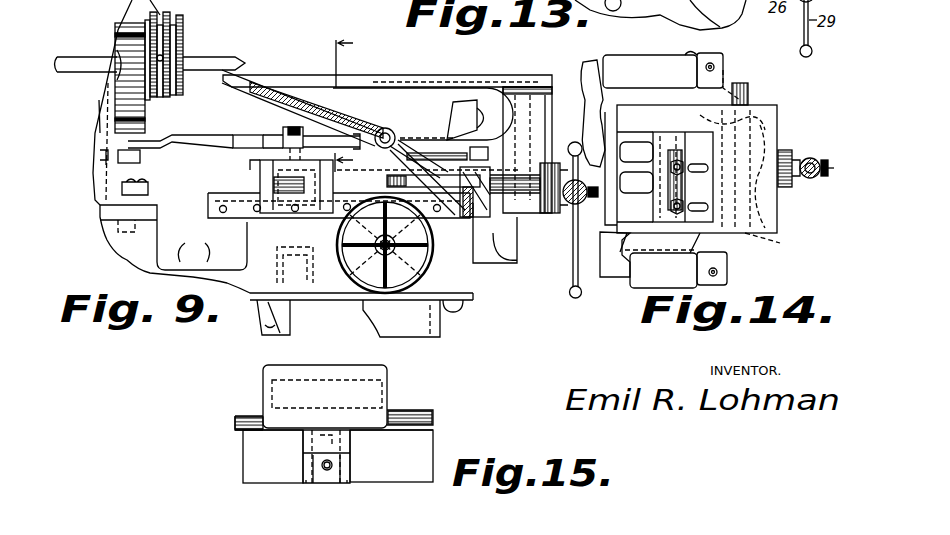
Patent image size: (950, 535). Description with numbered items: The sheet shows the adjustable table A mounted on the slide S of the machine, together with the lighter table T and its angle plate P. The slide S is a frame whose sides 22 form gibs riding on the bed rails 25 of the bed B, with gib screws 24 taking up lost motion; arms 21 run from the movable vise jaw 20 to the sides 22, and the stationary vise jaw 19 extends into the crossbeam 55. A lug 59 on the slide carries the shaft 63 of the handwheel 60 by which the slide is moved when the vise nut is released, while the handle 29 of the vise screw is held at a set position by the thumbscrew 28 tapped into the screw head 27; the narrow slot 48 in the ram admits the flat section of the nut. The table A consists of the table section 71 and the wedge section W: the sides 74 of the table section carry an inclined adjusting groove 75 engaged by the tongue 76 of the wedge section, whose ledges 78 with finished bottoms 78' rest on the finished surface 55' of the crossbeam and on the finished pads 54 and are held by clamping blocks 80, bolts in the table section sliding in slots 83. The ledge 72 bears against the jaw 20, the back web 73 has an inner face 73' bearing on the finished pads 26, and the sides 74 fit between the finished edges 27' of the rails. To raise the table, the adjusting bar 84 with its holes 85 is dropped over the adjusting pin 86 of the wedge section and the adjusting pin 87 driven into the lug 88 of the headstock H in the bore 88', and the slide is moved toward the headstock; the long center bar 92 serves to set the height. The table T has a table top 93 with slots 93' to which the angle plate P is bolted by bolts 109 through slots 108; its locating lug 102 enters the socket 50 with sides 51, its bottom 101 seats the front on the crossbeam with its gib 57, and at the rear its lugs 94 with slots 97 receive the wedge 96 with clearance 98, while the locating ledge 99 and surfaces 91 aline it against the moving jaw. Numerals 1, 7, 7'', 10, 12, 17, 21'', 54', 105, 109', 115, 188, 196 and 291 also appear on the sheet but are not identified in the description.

In FIG. 9, the base 1 is at (420, 327).
In FIG. 9, the foot 7 is at (285, 317).
In FIG. 9, the foot 7'' is at (255, 350).
In FIG. 9, the spindle axis 10 is at (203, 38).
In FIG. 9, the dimension line 12 is at (427, 104).
In FIG. 9, the recess 17 is at (193, 254).
In FIG. 9, the stationary vise jaw 19 is at (458, 125).
In FIG. 9, the movable vise jaw 20 is at (475, 122).
In FIG. 9, the arms 21 is at (515, 166).
In FIG. 9, the shaft end 21'' is at (591, 217).
In FIG. 14, the shaft end 21'' is at (715, 187).
In FIG. 14, the sides 22 is at (680, 272).
In FIG. 9, the gib screws 24 is at (225, 212).
In FIG. 9, the bed rails 25 is at (175, 205).
In FIG. 14, the bed rails 25 is at (590, 73).
In FIG. 9, the finished pads 26 is at (568, 150).
In FIG. 14, the screw head 27 is at (801, 159).
In FIG. 14, the finished edges 27' is at (605, 159).
In FIG. 14, the thumbscrew 28 is at (823, 178).
In FIG. 9, the handle 29 is at (575, 278).
In FIG. 14, the handle 29 is at (816, 165).
In FIG. 15, the narrow slot 48 is at (320, 482).
In FIG. 15, the socket 50 is at (343, 462).
In FIG. 15, the sides 51 is at (303, 478).
In FIG. 14, the finished pads 54 is at (733, 165).
In FIG. 14, the clamp hole 54' is at (736, 160).
In FIG. 15, the crossbeam 55 is at (357, 456).
In FIG. 9, the finished surface 55' is at (296, 186).
In FIG. 15, the finished surface 55' is at (420, 404).
In FIG. 15, the gibs 57 is at (433, 421).
In FIG. 9, the lug 59 is at (342, 280).
In FIG. 9, the handwheel 60 is at (432, 270).
In FIG. 9, the shaft 63 is at (388, 258).
In FIG. 9, the table section 71 is at (390, 77).
In FIG. 9, the ledge 72 is at (520, 77).
In FIG. 9, the back web 73 is at (564, 160).
In FIG. 9, the inner face 73' is at (561, 170).
In FIG. 9, the sides 74 is at (338, 113).
In FIG. 9, the inclined adjusting groove 75 is at (297, 80).
In FIG. 9, the tongue 76 is at (393, 158).
In FIG. 9, the ledges 78 is at (412, 165).
In FIG. 9, the finished bottoms 78' is at (373, 210).
In FIG. 9, the clamping blocks 80 is at (470, 157).
In FIG. 9, the slots 83 is at (365, 125).
In FIG. 9, the adjusting bar 84 is at (180, 140).
In FIG. 9, the holes 85 is at (212, 138).
In FIG. 9, the adjusting pin 86 is at (250, 135).
In FIG. 9, the adjusting pin 87 is at (147, 143).
In FIG. 9, the lug 88 is at (148, 158).
In FIG. 9, the bore 88' is at (159, 175).
In FIG. 14, the surfaces 91 is at (704, 161).
In FIG. 9, the long center bar 92 is at (241, 58).
In FIG. 14, the table top 93 is at (662, 101).
In FIG. 15, the table top 93 is at (325, 384).
In FIG. 14, the slots 93' is at (635, 155).
In FIG. 14, the lugs 94 is at (722, 118).
In FIG. 14, the wedge 96 is at (748, 100).
In FIG. 14, the slots 97 is at (752, 105).
In FIG. 14, the clearance 98 is at (770, 130).
In FIG. 14, the locating ledge 99 is at (745, 175).
In FIG. 15, the bottom 101 is at (260, 418).
In FIG. 15, the locating lug 102 is at (350, 445).
In FIG. 14, the lug 105 is at (641, 245).
In FIG. 14, the slots 108 is at (686, 190).
In FIG. 14, the bolts 109 is at (637, 188).
In FIG. 14, the lug 109' is at (679, 245).
In FIG. 9, the pulley 115 is at (127, 25).
In FIG. 9, the bracket 188 is at (120, 184).
In FIG. 9, the drive shaft 196 is at (127, 63).
In FIG. 9, the stop 291 is at (463, 308).
In FIG. 9, the adjustable table A is at (470, 73).
In FIG. 9, the bed B is at (133, 247).
In FIG. 9, the headstock H is at (105, 88).
In FIG. 14, the universal angle plate P is at (665, 166).
In FIG. 9, the slide S is at (233, 195).
In FIG. 14, the slide S is at (675, 68).
In FIG. 14, the table T is at (800, 93).
In FIG. 15, the table T is at (327, 347).
In FIG. 9, the wedge section W is at (280, 113).